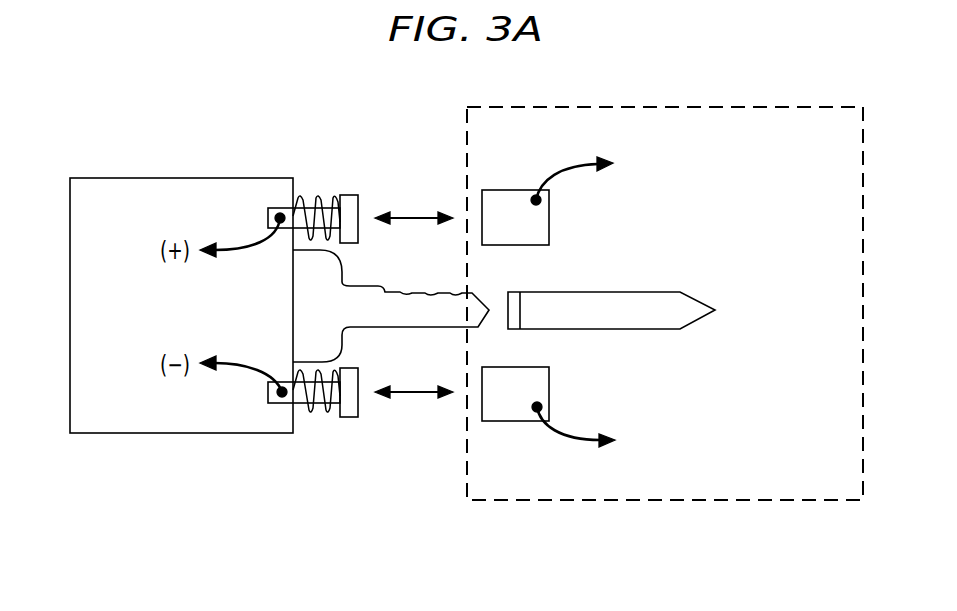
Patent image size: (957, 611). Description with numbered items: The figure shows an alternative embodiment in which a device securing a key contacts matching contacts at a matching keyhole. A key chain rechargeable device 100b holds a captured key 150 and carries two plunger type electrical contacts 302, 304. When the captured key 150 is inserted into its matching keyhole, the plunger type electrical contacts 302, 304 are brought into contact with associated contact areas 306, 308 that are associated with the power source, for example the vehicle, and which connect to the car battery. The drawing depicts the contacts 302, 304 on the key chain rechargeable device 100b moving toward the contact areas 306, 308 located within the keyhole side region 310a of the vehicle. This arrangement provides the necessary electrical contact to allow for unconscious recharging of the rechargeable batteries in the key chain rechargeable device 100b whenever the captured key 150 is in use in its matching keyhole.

The key chain rechargeable device 100b is at (180, 435).
The captured key 150 is at (357, 318).
The plunger type electrical contact 302 is at (323, 200).
The plunger type electrical contact 304 is at (338, 412).
The contact area 306 is at (514, 203).
The contact area 308 is at (510, 410).
The receptacle 310a is at (665, 344).